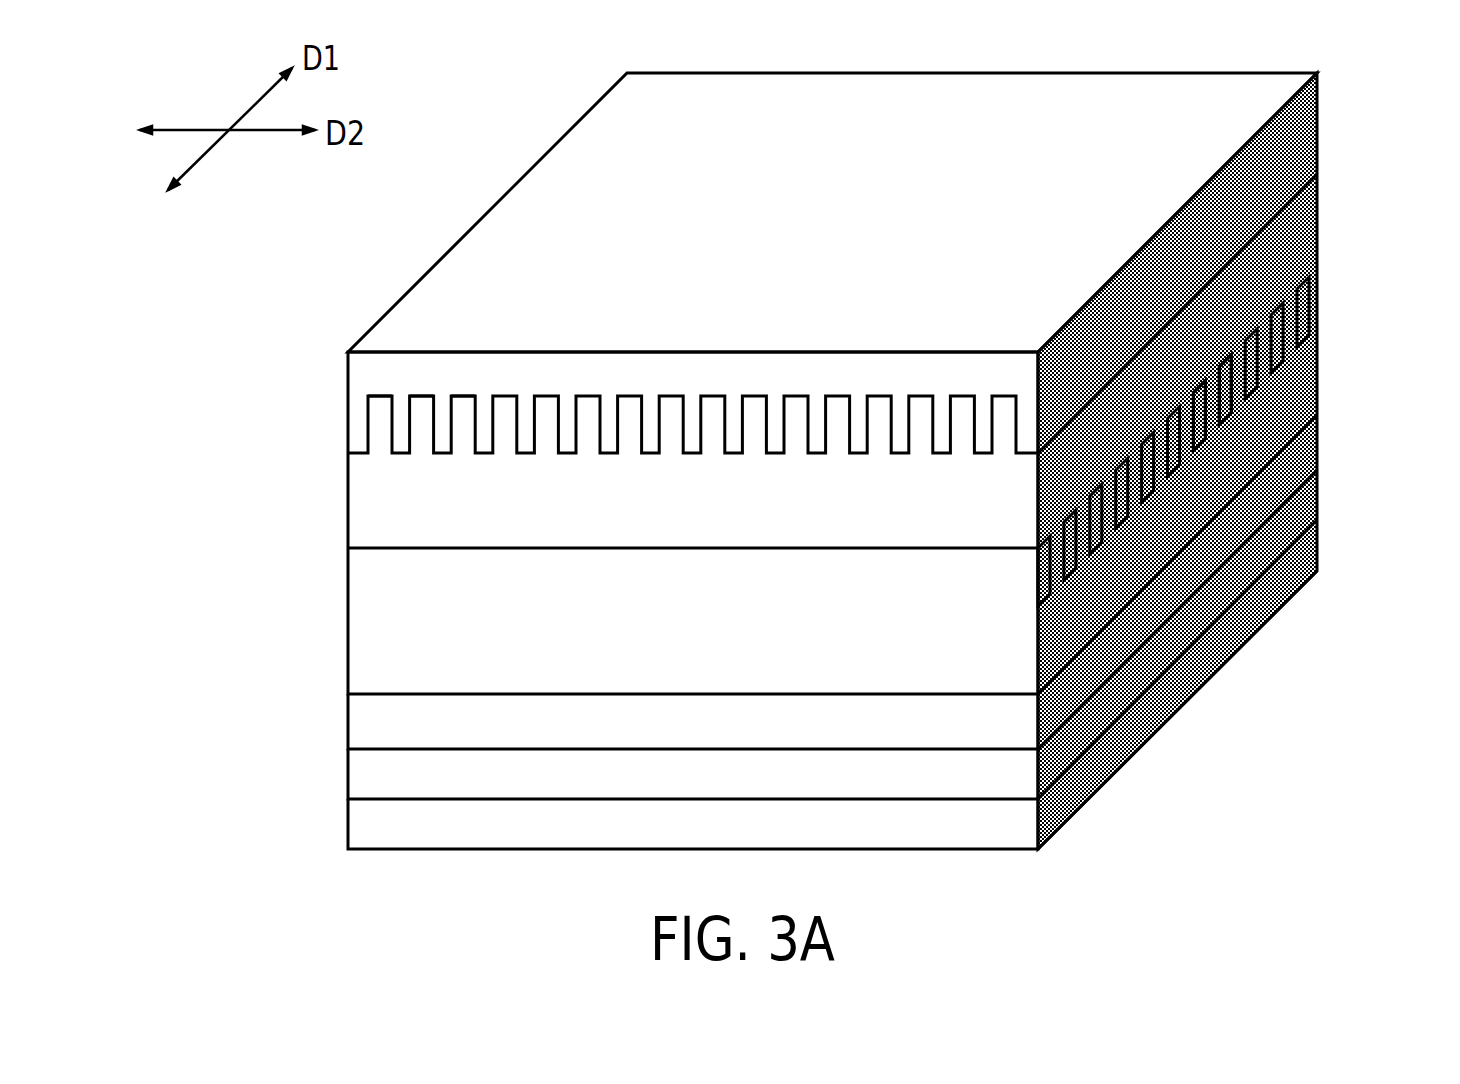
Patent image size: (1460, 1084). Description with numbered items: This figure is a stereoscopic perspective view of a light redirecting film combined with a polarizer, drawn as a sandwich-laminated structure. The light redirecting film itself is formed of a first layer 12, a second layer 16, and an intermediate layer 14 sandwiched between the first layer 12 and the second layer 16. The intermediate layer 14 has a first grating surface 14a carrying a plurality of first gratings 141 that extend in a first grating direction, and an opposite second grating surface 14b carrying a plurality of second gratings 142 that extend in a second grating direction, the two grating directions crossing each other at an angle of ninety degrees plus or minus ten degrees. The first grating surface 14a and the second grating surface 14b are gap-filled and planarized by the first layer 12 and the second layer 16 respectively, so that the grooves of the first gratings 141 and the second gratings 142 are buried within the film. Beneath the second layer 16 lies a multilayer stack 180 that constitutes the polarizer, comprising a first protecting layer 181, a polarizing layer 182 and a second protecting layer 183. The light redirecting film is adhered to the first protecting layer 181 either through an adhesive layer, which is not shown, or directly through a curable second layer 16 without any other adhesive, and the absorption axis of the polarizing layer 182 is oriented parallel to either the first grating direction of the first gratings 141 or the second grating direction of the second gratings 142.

The first layer 12 is at (1168, 292).
The intermediate layer 14 is at (375, 530).
The first grating surface 14a is at (362, 402).
The second grating surface 14b is at (1226, 453).
The first gratings 141 is at (382, 447).
The second gratings 142 is at (1287, 335).
The second layer 16 is at (707, 645).
The multilayer stack 180 is at (699, 659).
The first protecting layer 181 is at (365, 735).
The polarizing layer 182 is at (367, 782).
The second protecting layer 183 is at (367, 823).